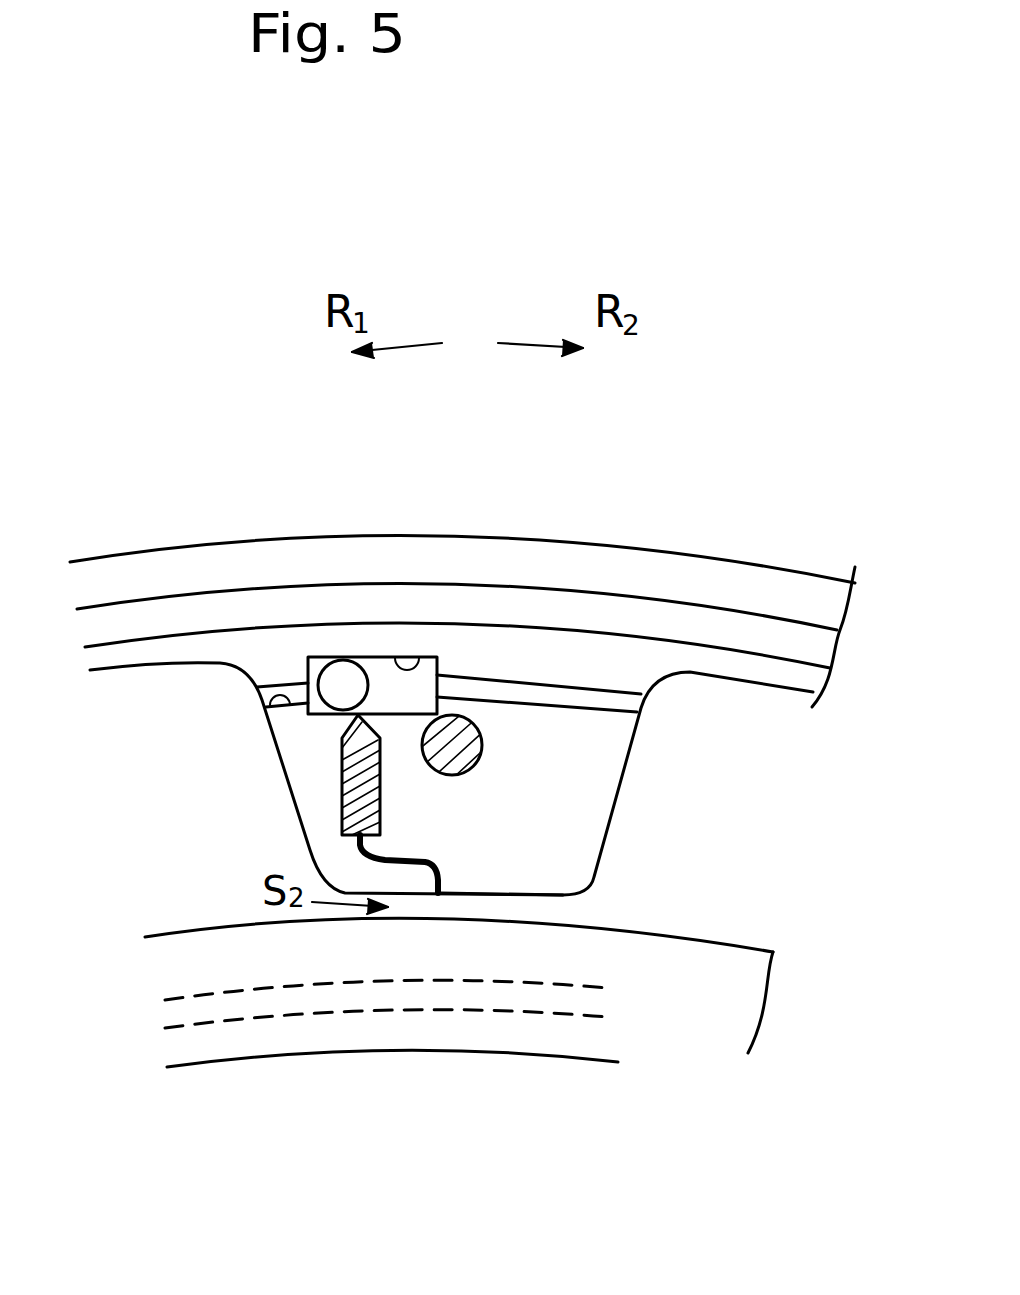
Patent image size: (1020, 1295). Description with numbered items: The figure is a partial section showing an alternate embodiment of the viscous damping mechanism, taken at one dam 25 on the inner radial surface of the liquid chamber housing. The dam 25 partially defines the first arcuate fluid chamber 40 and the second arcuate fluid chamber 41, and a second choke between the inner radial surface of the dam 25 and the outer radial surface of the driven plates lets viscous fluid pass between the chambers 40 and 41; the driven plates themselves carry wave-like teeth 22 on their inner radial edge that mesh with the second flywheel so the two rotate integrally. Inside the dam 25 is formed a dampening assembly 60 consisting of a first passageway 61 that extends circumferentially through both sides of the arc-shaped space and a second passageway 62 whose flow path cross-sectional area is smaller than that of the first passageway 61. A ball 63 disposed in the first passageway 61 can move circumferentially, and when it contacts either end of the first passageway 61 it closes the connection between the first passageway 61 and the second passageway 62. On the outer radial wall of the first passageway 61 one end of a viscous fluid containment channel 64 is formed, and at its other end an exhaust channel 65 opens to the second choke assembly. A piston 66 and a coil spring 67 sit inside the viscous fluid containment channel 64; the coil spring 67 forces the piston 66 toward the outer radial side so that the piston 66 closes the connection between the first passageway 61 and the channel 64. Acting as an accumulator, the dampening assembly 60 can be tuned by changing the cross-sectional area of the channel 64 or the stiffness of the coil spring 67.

The wave-like teeth 22 is at (428, 1028).
The dam 25 is at (582, 773).
The first arcuate fluid chamber 40 is at (736, 858).
The second arcuate fluid chamber 41 is at (164, 880).
The dampening assembly 60 is at (547, 648).
The first passageway 61 is at (420, 657).
The second passageway 62 is at (272, 700).
The ball 63 is at (330, 660).
The viscous fluid containment channel 64 is at (342, 807).
The exhaust channel 65 is at (447, 887).
The piston 66 is at (380, 750).
The coil spring 67 is at (380, 813).